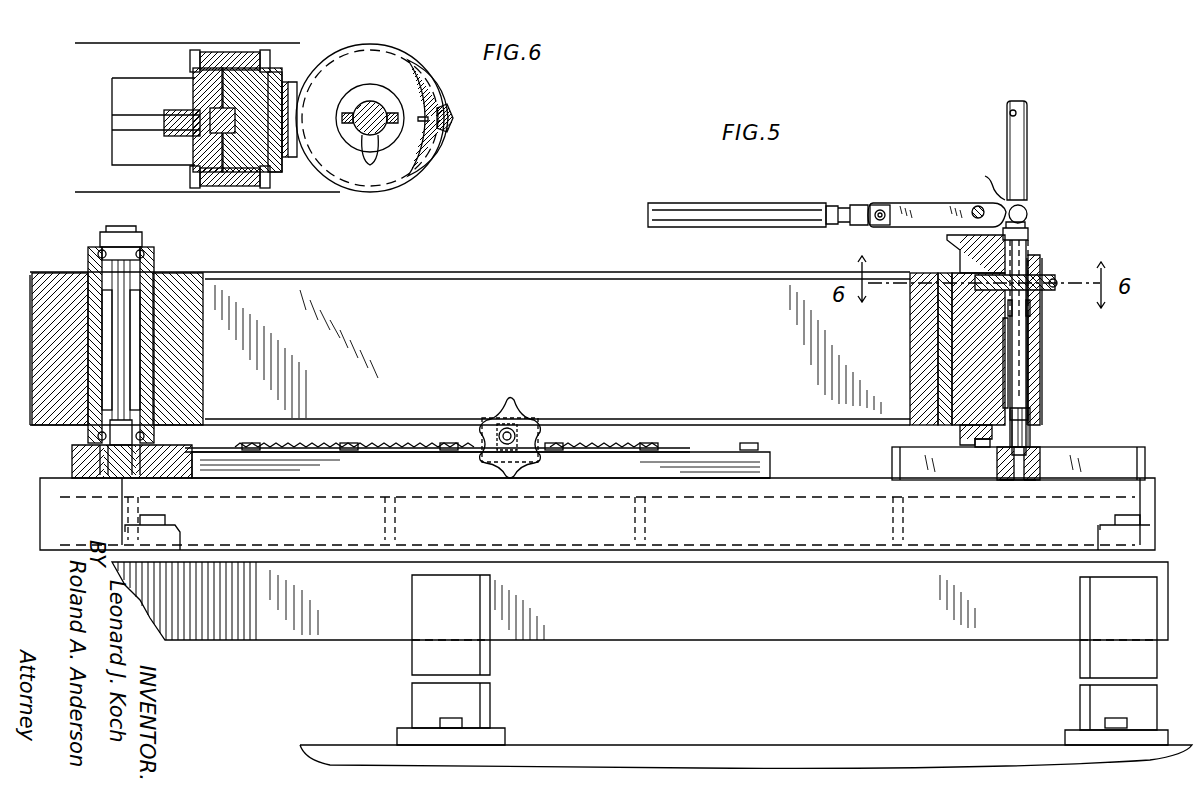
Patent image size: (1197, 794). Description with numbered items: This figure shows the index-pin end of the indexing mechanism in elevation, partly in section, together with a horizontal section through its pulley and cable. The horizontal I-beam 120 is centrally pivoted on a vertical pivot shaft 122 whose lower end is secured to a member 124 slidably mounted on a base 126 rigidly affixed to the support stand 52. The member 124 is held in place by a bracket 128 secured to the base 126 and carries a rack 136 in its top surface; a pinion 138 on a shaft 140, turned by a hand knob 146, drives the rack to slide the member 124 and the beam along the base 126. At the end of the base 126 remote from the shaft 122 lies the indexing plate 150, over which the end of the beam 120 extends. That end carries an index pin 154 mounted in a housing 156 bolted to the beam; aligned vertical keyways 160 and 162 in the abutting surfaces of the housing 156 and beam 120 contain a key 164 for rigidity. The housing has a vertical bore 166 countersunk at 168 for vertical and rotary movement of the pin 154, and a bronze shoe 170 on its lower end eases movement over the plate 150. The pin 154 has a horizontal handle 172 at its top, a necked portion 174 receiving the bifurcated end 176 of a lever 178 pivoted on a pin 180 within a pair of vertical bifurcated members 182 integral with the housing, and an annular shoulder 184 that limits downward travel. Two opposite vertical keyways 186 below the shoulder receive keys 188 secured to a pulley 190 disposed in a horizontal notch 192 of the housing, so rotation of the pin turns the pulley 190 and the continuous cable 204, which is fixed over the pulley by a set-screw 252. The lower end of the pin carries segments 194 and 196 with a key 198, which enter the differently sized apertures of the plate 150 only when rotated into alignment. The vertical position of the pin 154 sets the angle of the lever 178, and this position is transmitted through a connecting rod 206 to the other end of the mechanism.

In FIG. 5, the support stand 52 is at (335, 625).
In FIG. 6, the I-beam 120 is at (112, 108).
In FIG. 5, the I-beam 120 is at (455, 300).
In FIG. 5, the pivot shaft 122 is at (160, 300).
In FIG. 5, the member 124 is at (282, 480).
In FIG. 5, the base 126 is at (825, 540).
In FIG. 5, the bracket 128 is at (705, 485).
In FIG. 5, the rack 136 is at (622, 440).
In FIG. 5, the pinion 138 is at (495, 420).
In FIG. 5, the shaft 140 is at (515, 420).
In FIG. 5, the hand knob 146 is at (560, 405).
In FIG. 5, the indexing plate 150 is at (1125, 434).
In FIG. 6, the index pin 154 is at (370, 105).
In FIG. 5, the index pin 154 is at (1032, 375).
In FIG. 6, the housing 156 is at (275, 170).
In FIG. 5, the housing 156 is at (1042, 387).
In FIG. 6, the keyway 160 is at (193, 96).
In FIG. 5, the keyway 160 is at (960, 434).
In FIG. 6, the keyway 162 is at (196, 172).
In FIG. 5, the keyway 162 is at (912, 407).
In FIG. 6, the key 164 is at (210, 140).
In FIG. 5, the key 164 is at (912, 333).
In FIG. 5, the vertical bore 166 is at (1030, 357).
In FIG. 5, the countersink 168 is at (1045, 332).
In FIG. 5, the shoe 170 is at (985, 448).
In FIG. 5, the handle 172 is at (1017, 115).
In FIG. 5, the necked portion 174 is at (983, 175).
In FIG. 5, the bifurcated end 176 is at (1030, 210).
In FIG. 5, the lever 178 is at (930, 180).
In FIG. 5, the pivot pin 180 is at (975, 206).
In FIG. 5, the bifurcated members 182 is at (965, 236).
In FIG. 5, the annular shoulder 184 is at (1030, 234).
In FIG. 6, the keyways 186 is at (368, 160).
In FIG. 5, the keyways 186 is at (1035, 312).
In FIG. 6, the keys 188 is at (392, 117).
In FIG. 6, the pulley 190 is at (415, 172).
In FIG. 5, the pulley 190 is at (1043, 275).
In FIG. 6, the horizontal notch 192 is at (298, 72).
In FIG. 5, the horizontal notch 192 is at (985, 282).
In FIG. 5, the segment 194 is at (1035, 420).
In FIG. 5, the end segment 196 is at (1032, 450).
In FIG. 5, the key 198 is at (1000, 464).
In FIG. 6, the cable 204 is at (315, 30).
In FIG. 5, the cable 204 is at (1060, 282).
In FIG. 5, the connecting rod 206 is at (735, 194).
In FIG. 6, the set-screw 252 is at (420, 120).